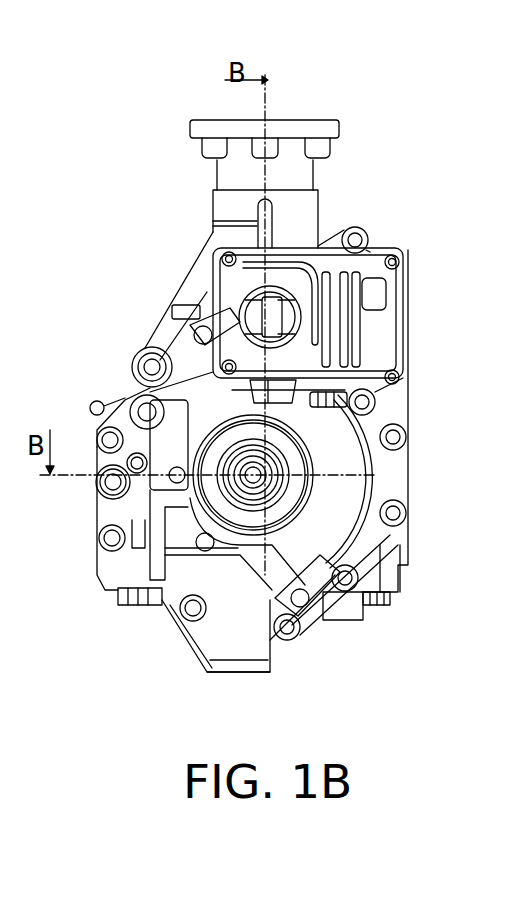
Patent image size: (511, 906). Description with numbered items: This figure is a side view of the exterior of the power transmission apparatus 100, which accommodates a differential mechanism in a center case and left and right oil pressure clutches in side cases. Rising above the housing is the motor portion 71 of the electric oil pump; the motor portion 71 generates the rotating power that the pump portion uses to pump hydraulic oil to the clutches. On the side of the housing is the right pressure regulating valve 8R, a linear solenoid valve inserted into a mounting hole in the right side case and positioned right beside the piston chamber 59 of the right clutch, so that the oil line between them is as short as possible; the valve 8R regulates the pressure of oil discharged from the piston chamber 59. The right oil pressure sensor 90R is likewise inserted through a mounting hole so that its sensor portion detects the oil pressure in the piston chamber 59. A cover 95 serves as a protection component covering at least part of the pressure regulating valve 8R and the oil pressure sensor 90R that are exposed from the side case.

The power transmission apparatus 100 is at (405, 119).
The motor portion 71 is at (405, 308).
The right pressure regulating valve 8R is at (130, 515).
The piston chamber 59 is at (413, 570).
The right oil pressure sensor 90R is at (283, 663).
The cover 95 is at (252, 672).